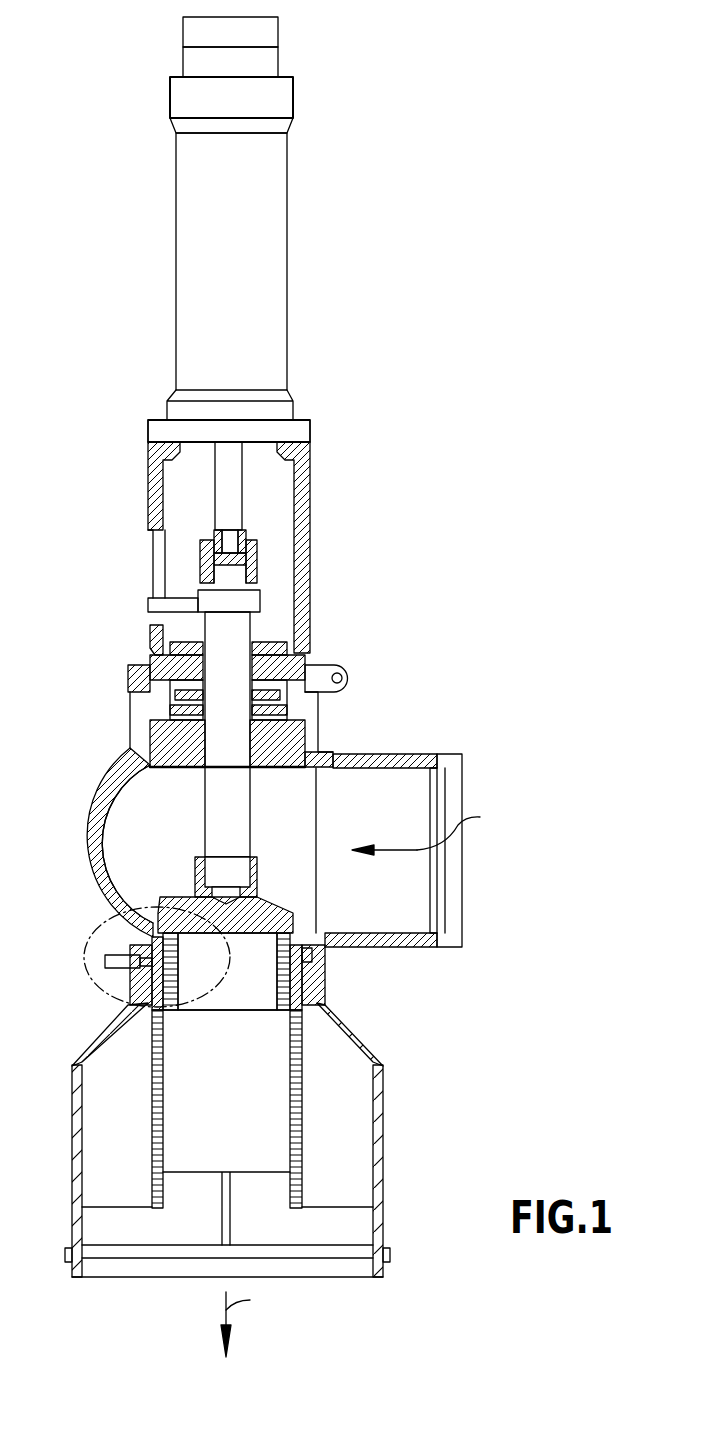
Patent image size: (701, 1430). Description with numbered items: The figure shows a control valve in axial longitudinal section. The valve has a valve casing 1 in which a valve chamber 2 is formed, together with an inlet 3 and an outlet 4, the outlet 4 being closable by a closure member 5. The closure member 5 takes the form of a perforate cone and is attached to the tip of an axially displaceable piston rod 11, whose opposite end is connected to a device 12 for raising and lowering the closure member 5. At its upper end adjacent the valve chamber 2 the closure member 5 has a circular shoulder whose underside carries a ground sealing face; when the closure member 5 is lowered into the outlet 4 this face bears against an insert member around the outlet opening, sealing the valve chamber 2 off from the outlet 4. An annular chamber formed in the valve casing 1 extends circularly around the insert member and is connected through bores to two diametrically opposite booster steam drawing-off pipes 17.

The valve casing 1 is at (95, 866).
The valve chamber 2 is at (128, 805).
The inlet 3 is at (398, 775).
The outlet 4 is at (90, 1220).
The closure member 5 is at (158, 917).
The piston rod 11 is at (215, 625).
The device for raising and lowering the closure member 12 is at (178, 302).
The booster steam drawing-off pipes 17 is at (105, 957).